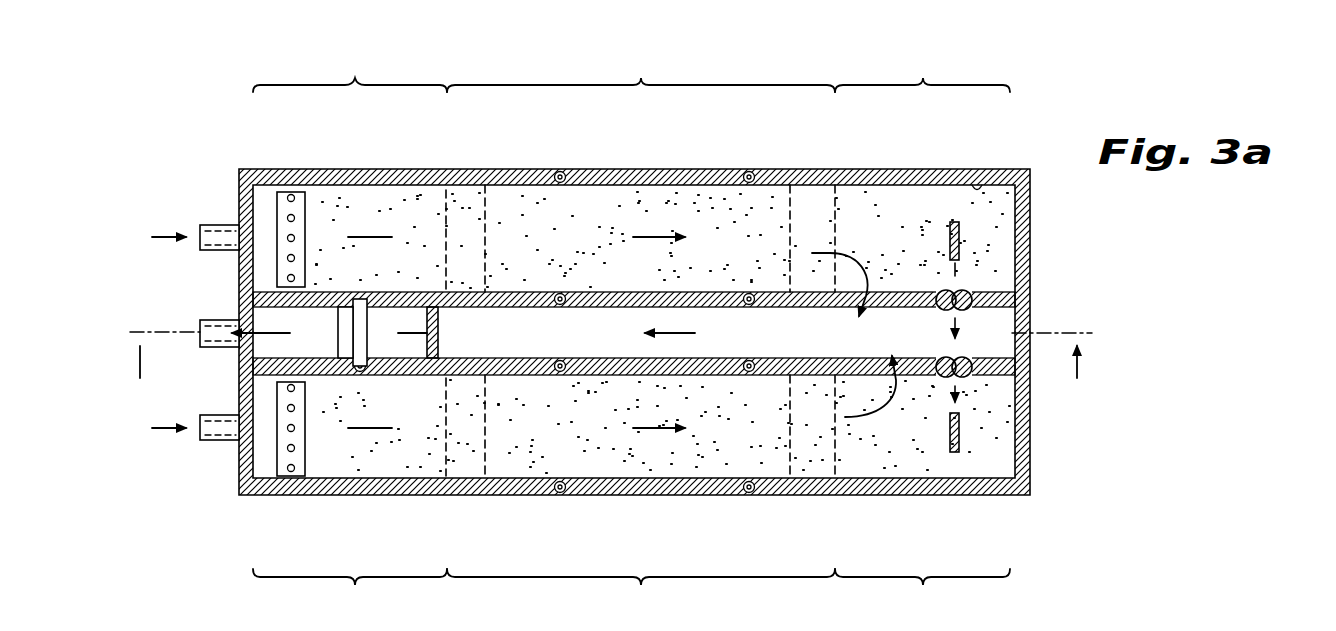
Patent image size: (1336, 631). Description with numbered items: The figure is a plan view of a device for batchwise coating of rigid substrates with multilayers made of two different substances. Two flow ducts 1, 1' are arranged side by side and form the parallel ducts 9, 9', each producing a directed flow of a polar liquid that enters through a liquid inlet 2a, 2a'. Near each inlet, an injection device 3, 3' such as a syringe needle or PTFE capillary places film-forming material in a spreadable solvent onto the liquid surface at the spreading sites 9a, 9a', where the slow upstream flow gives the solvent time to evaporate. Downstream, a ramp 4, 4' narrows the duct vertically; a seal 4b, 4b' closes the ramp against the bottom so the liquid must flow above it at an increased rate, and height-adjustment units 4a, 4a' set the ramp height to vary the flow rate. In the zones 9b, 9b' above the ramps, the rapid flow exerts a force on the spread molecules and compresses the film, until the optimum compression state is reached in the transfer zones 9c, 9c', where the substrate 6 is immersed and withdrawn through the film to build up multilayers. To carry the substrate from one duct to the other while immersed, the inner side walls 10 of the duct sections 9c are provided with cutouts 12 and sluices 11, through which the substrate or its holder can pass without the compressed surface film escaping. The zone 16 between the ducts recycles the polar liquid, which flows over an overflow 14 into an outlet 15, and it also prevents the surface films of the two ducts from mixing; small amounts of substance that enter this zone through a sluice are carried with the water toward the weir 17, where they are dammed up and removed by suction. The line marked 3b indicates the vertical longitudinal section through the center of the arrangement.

The flow duct 1 is at (634, 223).
The flow duct 1' is at (634, 439).
The liquid inlet 2a is at (195, 211).
The liquid inlet 2a' is at (195, 456).
The injection device 3 is at (272, 202).
The injection device 3' is at (263, 457).
The section line 3b is at (612, 348).
The ramp 4 is at (428, 203).
The ramp 4' is at (412, 462).
The suspension devices 4a is at (675, 211).
The height-adjustment units 4a' is at (567, 454).
The flexible seal 4b is at (650, 233).
The seal 4b' is at (662, 460).
The substrate 6 is at (960, 238).
The duct 9 is at (661, 203).
The duct 9' is at (658, 462).
The zone in front of the ramp 9a is at (350, 61).
The spreading site 9a' is at (350, 596).
The zone above the ramp 9b is at (641, 61).
The compression zone 9b' is at (641, 596).
The zone of film transfer 9c is at (922, 61).
The point for immersion and withdrawal 9c' is at (922, 596).
The inner side walls 10 is at (592, 355).
The sluices 11 is at (968, 286).
The cutouts 12 is at (995, 168).
The overflow 14 is at (355, 333).
The outlet 15 is at (202, 322).
The zone between the ducts 16 is at (985, 325).
The weir 17 is at (440, 347).